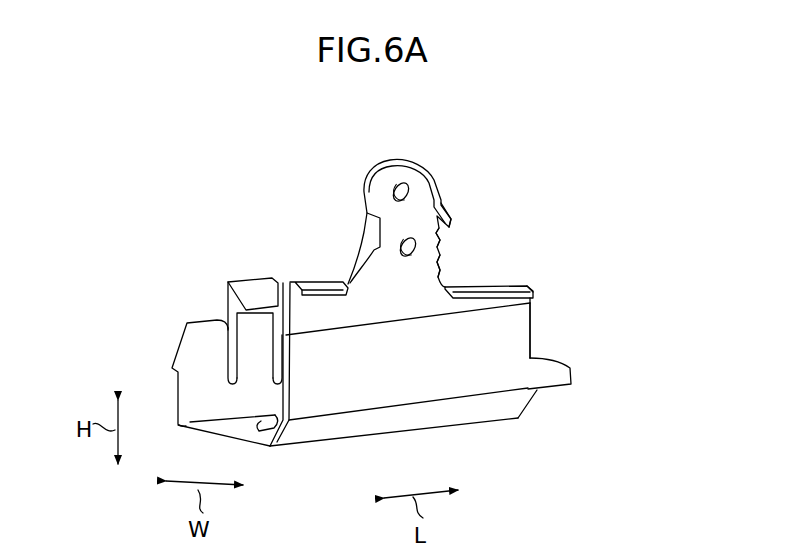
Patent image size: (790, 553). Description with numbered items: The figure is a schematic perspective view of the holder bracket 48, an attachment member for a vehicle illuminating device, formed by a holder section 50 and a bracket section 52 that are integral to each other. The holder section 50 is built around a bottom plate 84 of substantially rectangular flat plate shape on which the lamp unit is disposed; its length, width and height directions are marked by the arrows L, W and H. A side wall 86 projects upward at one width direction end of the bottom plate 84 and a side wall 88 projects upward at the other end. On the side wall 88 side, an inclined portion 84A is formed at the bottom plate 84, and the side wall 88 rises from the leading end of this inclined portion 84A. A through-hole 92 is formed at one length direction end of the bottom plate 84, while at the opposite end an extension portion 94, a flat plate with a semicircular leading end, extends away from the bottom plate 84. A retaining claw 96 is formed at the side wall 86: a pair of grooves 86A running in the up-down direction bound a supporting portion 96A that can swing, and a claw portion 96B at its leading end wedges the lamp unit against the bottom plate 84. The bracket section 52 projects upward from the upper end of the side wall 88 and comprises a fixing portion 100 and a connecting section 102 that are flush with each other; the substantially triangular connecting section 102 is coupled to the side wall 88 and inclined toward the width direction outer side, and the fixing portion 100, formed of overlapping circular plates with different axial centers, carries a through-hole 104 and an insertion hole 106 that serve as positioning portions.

The holder bracket 48 is at (168, 280).
The holder section 50 is at (556, 348).
The bracket section 52 is at (558, 192).
The bottom plate 84 is at (308, 445).
The inclined portion 84A is at (518, 405).
The side wall 86 is at (202, 352).
The grooves 86A is at (278, 386).
The side wall 88 is at (517, 330).
The through-hole 92 is at (277, 430).
The extension portion 94 is at (571, 372).
The retaining claw 96 is at (195, 177).
The supporting portion 96A is at (262, 328).
The claw portion 96B is at (258, 290).
The fixing portion 100 is at (441, 240).
The connecting section 102 is at (425, 305).
The through-hole 104 is at (418, 190).
The insertion hole 106 is at (424, 240).